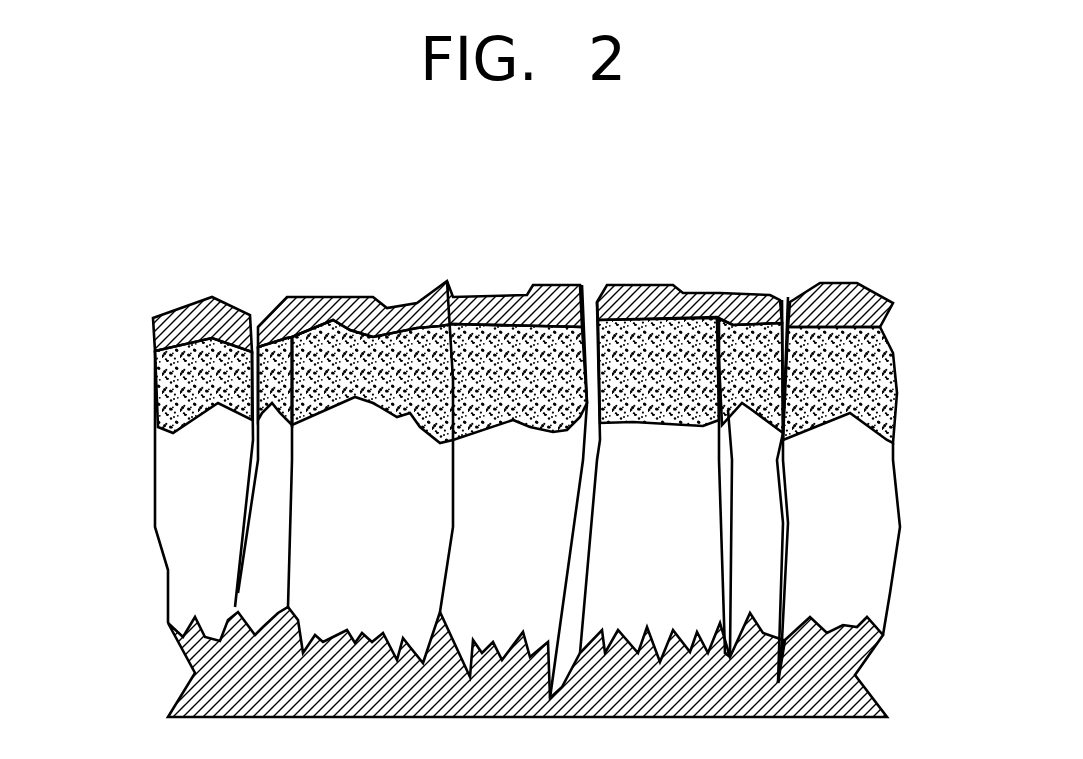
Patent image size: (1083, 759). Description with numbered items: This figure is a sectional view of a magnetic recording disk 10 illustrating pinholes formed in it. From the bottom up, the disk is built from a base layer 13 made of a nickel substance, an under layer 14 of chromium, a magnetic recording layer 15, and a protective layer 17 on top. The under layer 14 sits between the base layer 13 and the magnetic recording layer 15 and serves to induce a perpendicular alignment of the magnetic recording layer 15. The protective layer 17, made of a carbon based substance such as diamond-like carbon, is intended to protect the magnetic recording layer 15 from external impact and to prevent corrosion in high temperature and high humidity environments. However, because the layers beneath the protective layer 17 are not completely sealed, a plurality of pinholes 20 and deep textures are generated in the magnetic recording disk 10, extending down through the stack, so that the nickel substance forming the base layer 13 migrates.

The magnetic recording disk 10 is at (148, 258).
The base layer 13 is at (843, 672).
The under layer 14 is at (882, 532).
The magnetic recording layer 15 is at (882, 378).
The protective layer 17 is at (877, 310).
The pinholes 20 is at (593, 288).